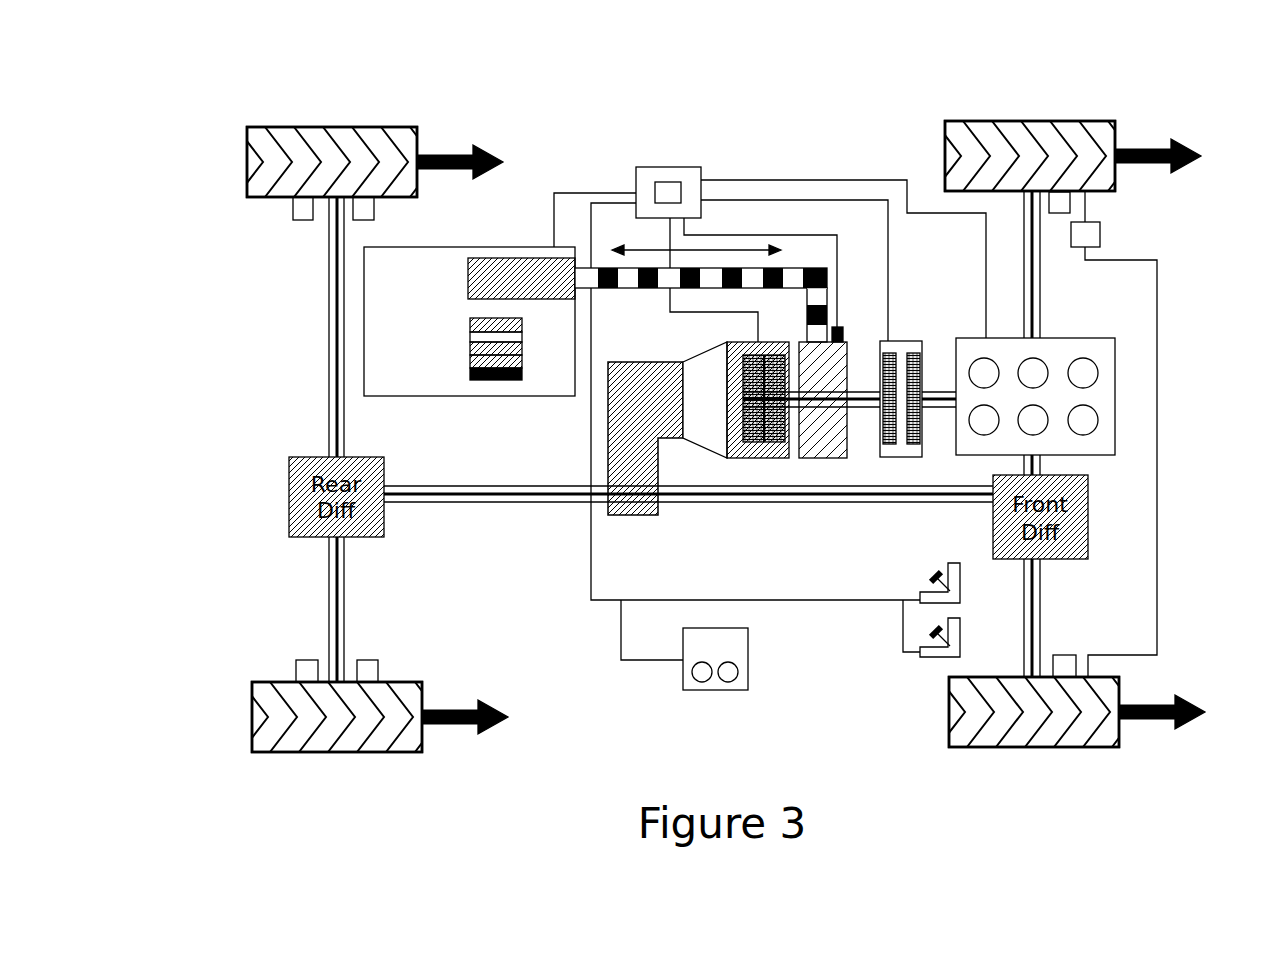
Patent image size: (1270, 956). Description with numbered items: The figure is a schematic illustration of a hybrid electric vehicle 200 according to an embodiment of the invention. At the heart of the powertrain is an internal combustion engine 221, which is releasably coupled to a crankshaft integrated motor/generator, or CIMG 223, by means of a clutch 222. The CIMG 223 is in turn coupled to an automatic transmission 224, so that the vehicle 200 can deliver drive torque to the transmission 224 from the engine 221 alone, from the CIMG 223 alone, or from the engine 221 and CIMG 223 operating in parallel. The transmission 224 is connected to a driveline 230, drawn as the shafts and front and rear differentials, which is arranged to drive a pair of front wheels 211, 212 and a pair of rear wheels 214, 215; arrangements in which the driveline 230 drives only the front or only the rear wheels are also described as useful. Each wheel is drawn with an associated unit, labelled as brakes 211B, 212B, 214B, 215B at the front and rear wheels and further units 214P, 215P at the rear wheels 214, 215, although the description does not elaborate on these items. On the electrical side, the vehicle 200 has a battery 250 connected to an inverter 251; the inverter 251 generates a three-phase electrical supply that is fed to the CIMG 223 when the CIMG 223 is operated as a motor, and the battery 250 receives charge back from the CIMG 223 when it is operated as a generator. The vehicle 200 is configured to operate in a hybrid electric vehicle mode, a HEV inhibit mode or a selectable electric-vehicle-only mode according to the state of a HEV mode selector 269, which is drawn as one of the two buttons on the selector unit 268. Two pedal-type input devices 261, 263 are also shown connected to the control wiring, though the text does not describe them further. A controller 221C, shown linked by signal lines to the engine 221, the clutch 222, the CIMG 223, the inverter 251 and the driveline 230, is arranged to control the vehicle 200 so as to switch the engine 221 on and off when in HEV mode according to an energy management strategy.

The hybrid electric vehicle 200 is at (246, 88).
The front wheel 211 is at (1093, 130).
The front right brake 211B is at (1061, 200).
The front wheel 212 is at (1100, 735).
The front left brake 212B is at (1065, 668).
The rear wheel 214 is at (388, 135).
The rear right brake 214B is at (364, 205).
The rear right wheel electric motor 214P is at (295, 210).
The rear wheel 215 is at (288, 742).
The rear left brake 215B is at (366, 672).
The rear left wheel electric motor 215P is at (305, 672).
The internal combustion engine 221 is at (1105, 393).
The controller 221C is at (677, 167).
The clutch 222 is at (904, 345).
The crankshaft integrated motor/generator 223 is at (825, 457).
The automatic transmission 224 is at (760, 457).
The driveline 230 is at (562, 692).
The battery 250 is at (445, 396).
The inverter 251 is at (521, 258).
The accelerator pedal sensor 261 is at (930, 577).
The brake pedal sensor 263 is at (930, 632).
The mode selector 268 is at (729, 683).
The HEV mode selector 269 is at (690, 680).